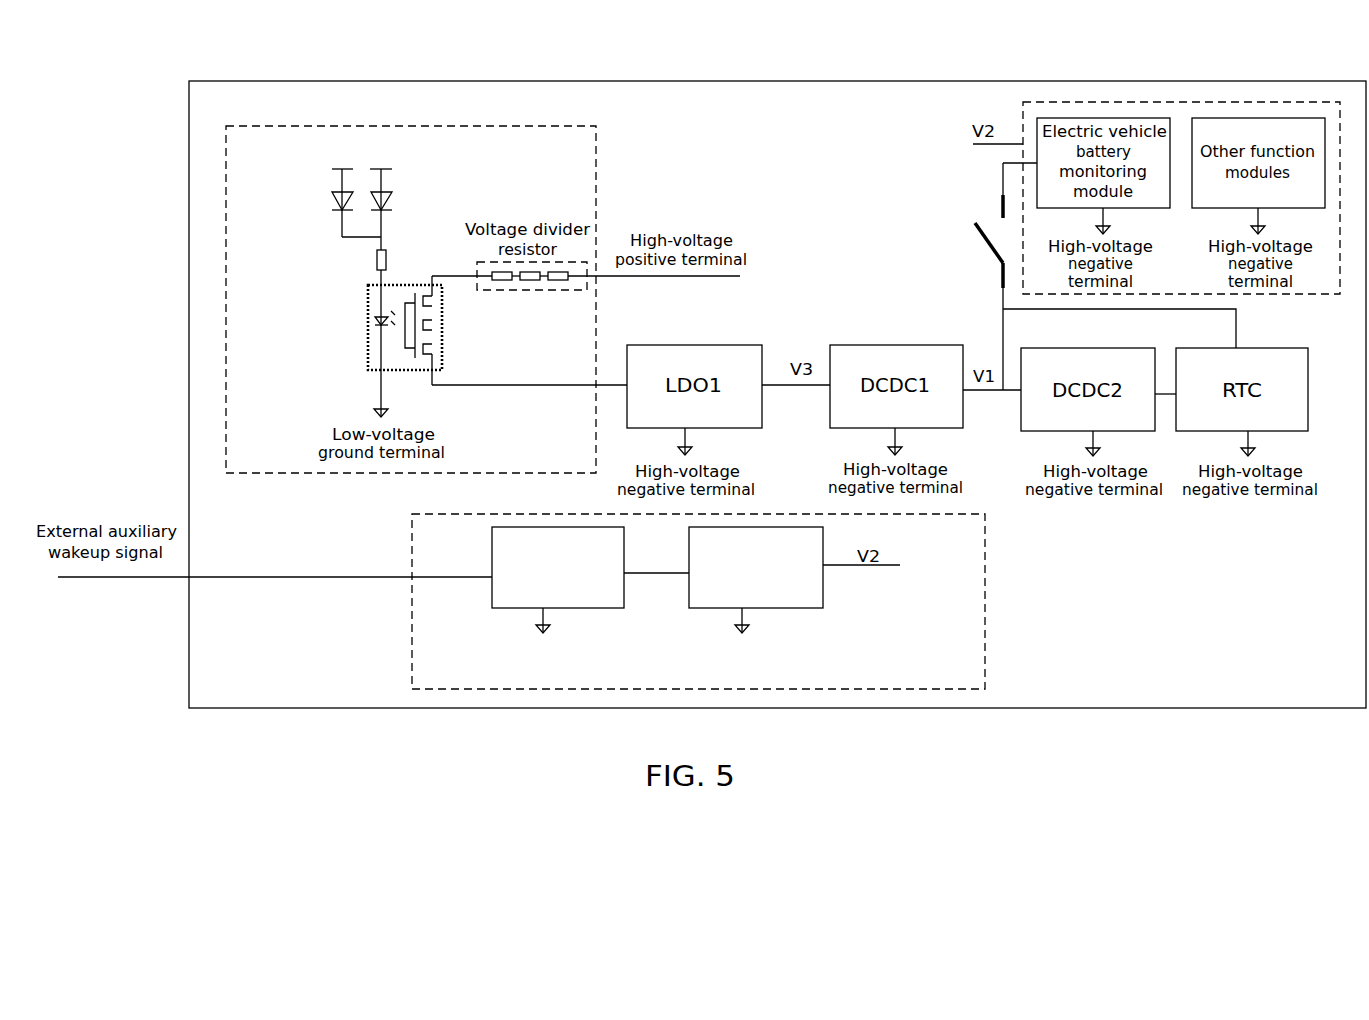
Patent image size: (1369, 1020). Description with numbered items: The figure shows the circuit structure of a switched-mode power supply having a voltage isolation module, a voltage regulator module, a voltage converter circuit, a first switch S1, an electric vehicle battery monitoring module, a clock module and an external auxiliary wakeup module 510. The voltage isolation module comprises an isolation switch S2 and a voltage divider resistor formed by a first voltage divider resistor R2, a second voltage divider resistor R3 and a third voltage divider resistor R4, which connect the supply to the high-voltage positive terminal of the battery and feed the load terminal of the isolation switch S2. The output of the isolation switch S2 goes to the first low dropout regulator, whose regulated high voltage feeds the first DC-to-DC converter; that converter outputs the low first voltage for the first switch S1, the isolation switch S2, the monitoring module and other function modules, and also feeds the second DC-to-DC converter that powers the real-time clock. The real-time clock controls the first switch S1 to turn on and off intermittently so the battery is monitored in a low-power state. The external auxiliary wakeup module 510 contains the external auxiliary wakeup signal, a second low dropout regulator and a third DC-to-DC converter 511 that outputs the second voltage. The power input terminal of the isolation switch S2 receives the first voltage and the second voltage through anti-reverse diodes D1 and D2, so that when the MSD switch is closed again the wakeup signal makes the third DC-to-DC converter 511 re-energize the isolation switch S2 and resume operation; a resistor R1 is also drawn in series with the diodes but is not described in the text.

The external auxiliary wakeup module 510 is at (736, 601).
The third DC-to-DC converter DCDC3 511 is at (823, 587).
The first switch S1 is at (992, 276).
The isolation switch S2 is at (365, 346).
The anti-reverse diode D1 is at (342, 192).
The anti-reverse diode D2 is at (396, 198).
The resistor R1 is at (369, 266).
The first voltage divider resistor R2 is at (503, 293).
The second voltage divider resistor R3 is at (531, 293).
The third voltage divider resistor R4 is at (559, 293).